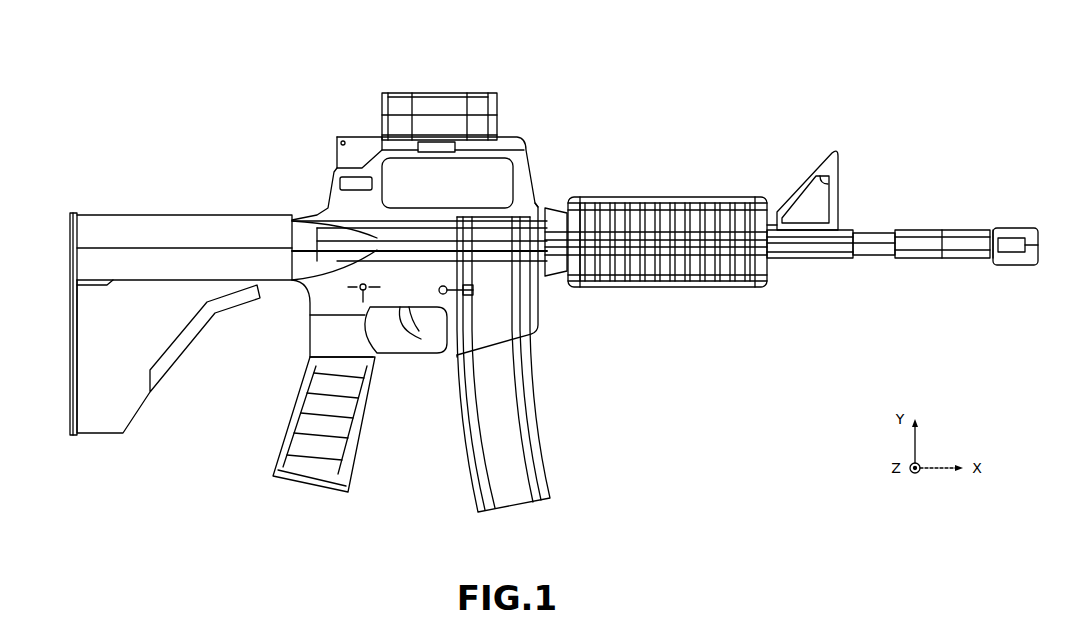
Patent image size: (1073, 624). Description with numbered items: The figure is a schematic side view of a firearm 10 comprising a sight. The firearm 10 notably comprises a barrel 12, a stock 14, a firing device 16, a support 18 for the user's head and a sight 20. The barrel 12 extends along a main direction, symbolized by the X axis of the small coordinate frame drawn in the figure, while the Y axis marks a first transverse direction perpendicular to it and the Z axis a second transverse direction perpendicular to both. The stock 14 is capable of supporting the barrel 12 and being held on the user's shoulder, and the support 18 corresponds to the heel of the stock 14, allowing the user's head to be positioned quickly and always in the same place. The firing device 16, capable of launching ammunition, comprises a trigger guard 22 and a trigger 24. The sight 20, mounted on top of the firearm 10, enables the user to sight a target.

The firearm 10 is at (783, 79).
The barrel 12 is at (914, 238).
The stock 14 is at (613, 279).
The firing device 16 is at (418, 385).
The support for the user's head 18 is at (212, 230).
The sight 20 is at (442, 108).
The trigger guard 22 is at (452, 348).
The trigger 24 is at (404, 340).